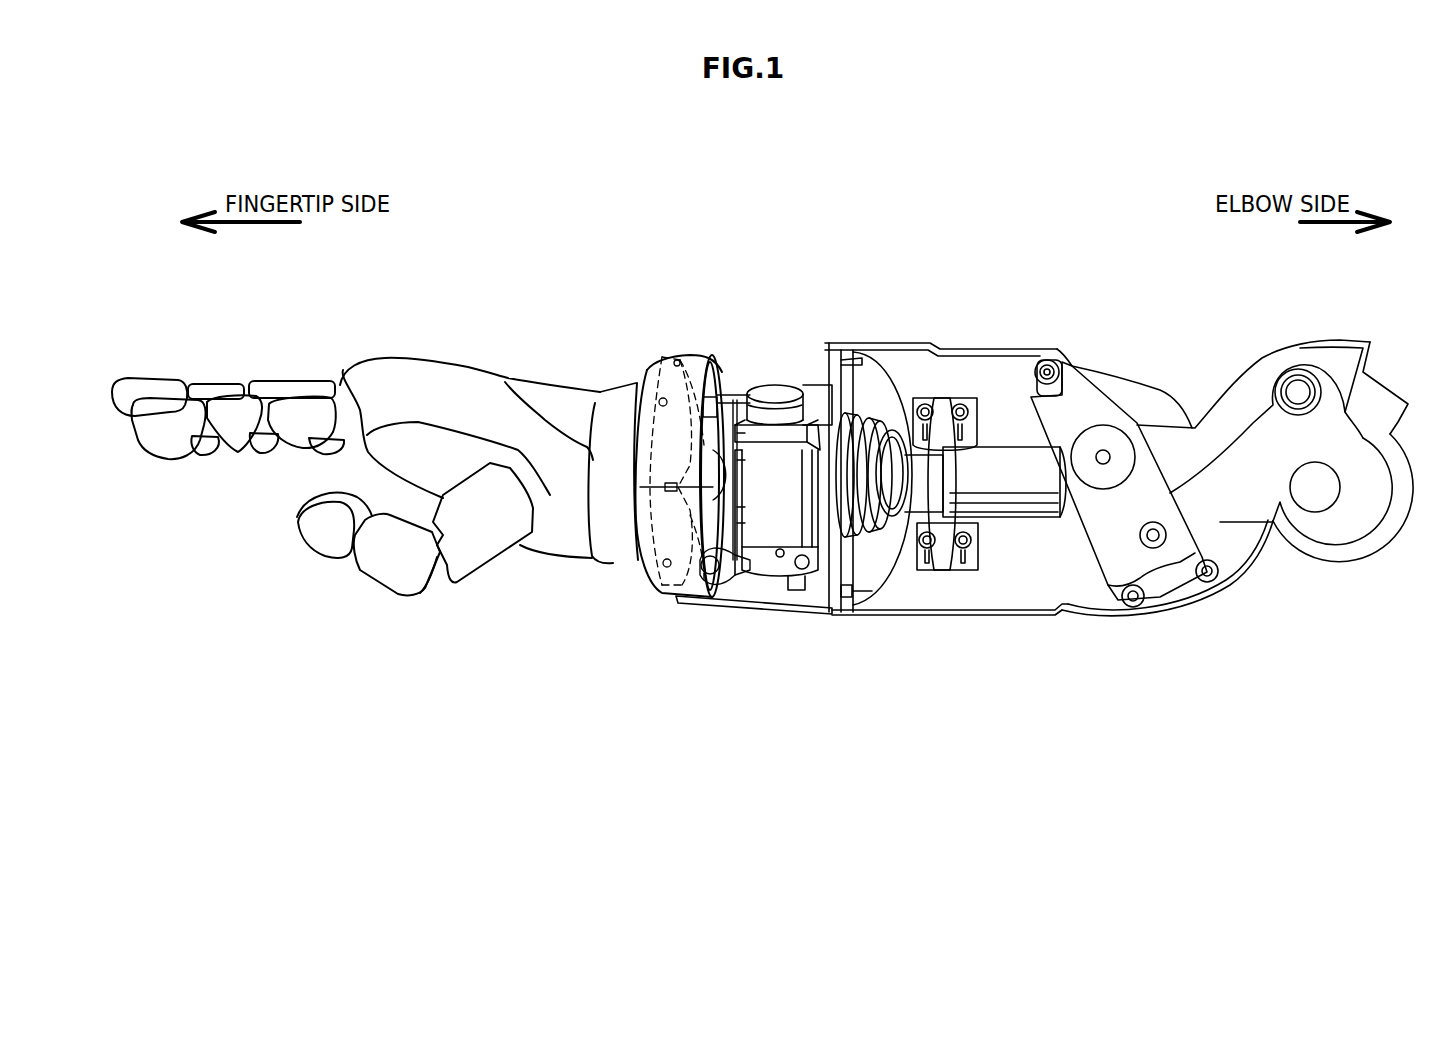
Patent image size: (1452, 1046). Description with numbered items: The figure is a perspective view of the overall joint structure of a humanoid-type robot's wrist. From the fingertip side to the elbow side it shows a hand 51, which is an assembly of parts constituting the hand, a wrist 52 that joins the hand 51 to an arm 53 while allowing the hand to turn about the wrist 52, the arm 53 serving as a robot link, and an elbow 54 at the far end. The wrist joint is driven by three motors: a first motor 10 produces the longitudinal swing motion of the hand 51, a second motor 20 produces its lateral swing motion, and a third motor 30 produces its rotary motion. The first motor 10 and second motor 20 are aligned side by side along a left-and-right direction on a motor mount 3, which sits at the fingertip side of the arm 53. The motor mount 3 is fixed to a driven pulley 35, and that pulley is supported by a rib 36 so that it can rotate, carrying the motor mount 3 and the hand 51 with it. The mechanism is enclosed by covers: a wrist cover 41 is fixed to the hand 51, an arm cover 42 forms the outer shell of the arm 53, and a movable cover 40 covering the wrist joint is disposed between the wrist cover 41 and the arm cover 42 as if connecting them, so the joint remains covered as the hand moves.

The motor mount 3 is at (822, 422).
The first motor 10 is at (802, 377).
The second motor 20 is at (772, 562).
The third motor 30 is at (1009, 528).
The driven pulley 35 is at (875, 412).
The rib 36 is at (866, 405).
The movable cover 40 is at (655, 355).
The wrist cover 41 is at (618, 562).
The arm cover 42 is at (750, 614).
The hand 51 is at (390, 620).
The wrist 52 is at (644, 636).
The arm 53 is at (945, 765).
The elbow 54 is at (1313, 598).